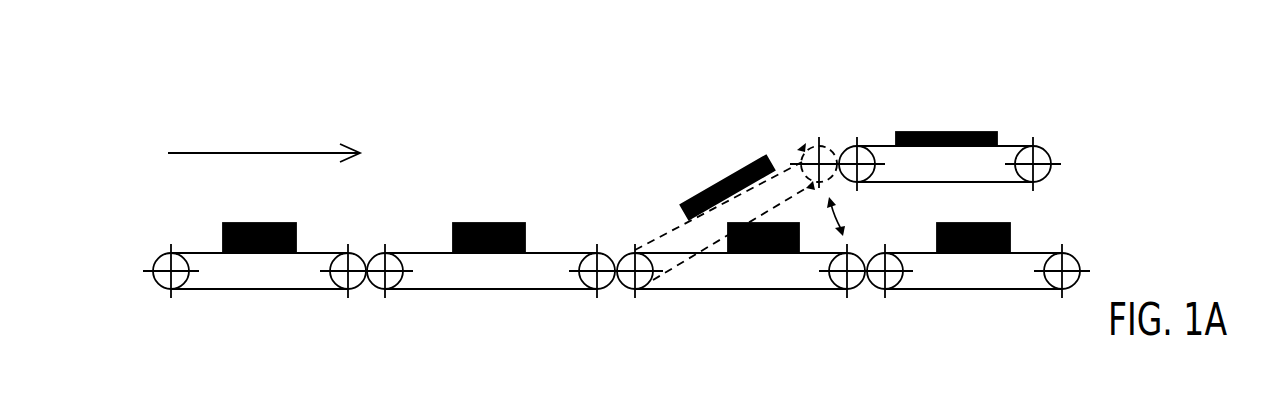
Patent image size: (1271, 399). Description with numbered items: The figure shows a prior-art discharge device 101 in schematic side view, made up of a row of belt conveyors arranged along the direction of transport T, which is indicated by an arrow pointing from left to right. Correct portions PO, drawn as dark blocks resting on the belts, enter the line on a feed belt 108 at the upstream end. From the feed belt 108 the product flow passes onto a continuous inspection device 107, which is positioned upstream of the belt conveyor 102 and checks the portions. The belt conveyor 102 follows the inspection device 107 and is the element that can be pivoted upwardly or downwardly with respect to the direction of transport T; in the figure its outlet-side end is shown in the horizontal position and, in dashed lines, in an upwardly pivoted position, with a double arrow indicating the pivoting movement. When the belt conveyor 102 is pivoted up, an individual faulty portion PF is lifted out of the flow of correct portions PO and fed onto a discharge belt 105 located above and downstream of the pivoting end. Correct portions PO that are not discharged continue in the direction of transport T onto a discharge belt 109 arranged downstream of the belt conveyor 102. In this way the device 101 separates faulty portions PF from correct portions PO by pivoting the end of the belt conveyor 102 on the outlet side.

The discharge device 101 is at (1068, 104).
The belt conveyor 102 is at (735, 306).
The discharge belt 105 is at (1012, 115).
The inspection device 107 is at (486, 306).
The feed belt 108 is at (254, 306).
The discharge belt 109 is at (967, 306).
The correct portions PO is at (233, 222).
The faulty portions PF is at (925, 130).
The direction of transport T is at (264, 139).